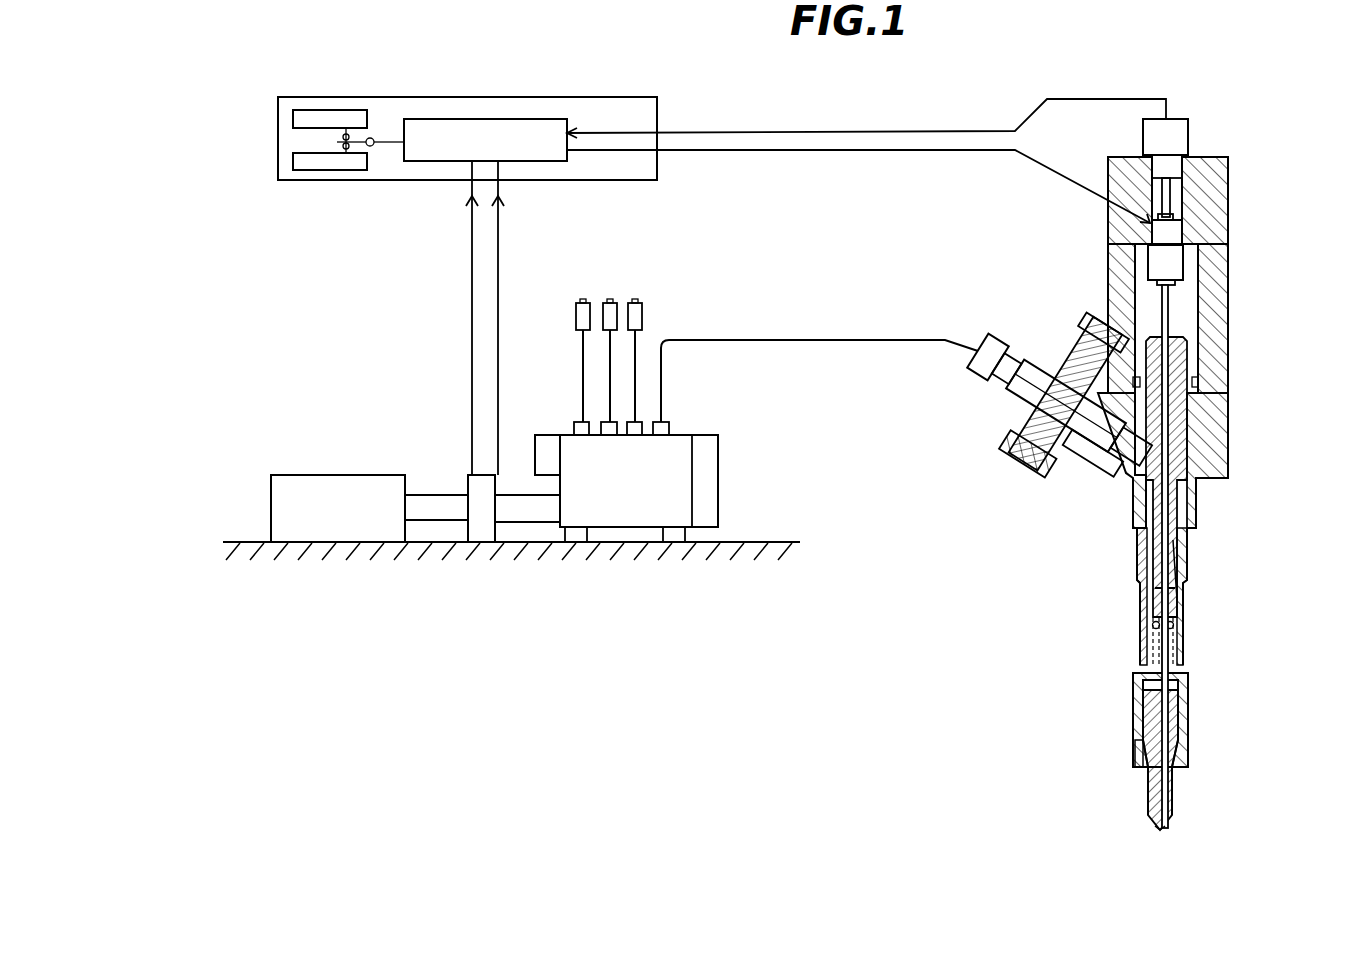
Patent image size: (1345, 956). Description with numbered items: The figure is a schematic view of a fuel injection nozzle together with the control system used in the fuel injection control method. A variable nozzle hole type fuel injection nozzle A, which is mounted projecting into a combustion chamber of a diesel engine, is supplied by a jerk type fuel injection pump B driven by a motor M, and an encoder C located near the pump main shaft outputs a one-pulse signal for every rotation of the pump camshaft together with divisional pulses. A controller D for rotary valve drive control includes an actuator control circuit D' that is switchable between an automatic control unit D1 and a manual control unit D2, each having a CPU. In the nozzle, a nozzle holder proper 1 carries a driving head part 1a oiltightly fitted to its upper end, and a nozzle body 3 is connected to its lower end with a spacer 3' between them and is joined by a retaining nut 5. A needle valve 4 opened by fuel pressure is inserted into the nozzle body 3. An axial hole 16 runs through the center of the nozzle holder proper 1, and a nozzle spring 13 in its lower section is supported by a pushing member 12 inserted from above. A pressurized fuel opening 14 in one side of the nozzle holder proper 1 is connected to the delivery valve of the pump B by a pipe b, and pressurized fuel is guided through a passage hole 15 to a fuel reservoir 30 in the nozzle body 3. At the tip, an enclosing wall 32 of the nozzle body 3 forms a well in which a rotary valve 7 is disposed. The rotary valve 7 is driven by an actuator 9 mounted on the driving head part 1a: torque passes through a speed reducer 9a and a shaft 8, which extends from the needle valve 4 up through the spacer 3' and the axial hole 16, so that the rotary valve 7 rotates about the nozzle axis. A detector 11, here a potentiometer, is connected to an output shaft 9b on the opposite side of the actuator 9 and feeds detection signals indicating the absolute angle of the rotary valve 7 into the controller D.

The controller D is at (467, 112).
The actuator control circuit D' is at (510, 105).
The automatic control unit D1 is at (300, 112).
The manual control unit D2 is at (300, 160).
The motor M is at (340, 524).
The speed detecting means (encoder) C is at (476, 535).
The jerk type fuel injection pump B is at (650, 512).
The variable nozzle hole type fuel injection nozzle A is at (580, 312).
The pipe b is at (583, 355).
The detector 11 is at (1178, 128).
The driving head part 1a is at (1212, 300).
The nozzle holder proper 1 is at (1213, 420).
The output shaft 9b is at (1168, 193).
The actuator 9 is at (1172, 235).
The speed reducer 9a is at (1172, 265).
The passage hole 15 is at (1150, 535).
The pushing member 12 is at (1170, 540).
The axial hole 16 is at (1180, 572).
The shaft 8 is at (1163, 590).
The nozzle spring 13 is at (1152, 626).
The pressurized fuel opening 14 is at (1135, 455).
The nozzle body 3 is at (1209, 720).
The spacer 3' is at (1218, 700).
The needle valve 4 is at (1170, 793).
The retaining nut 5 is at (1185, 757).
The enclosing wall 32 is at (1165, 830).
The rotary valve 7 is at (1155, 832).
The fuel reservoir 30 is at (1135, 750).